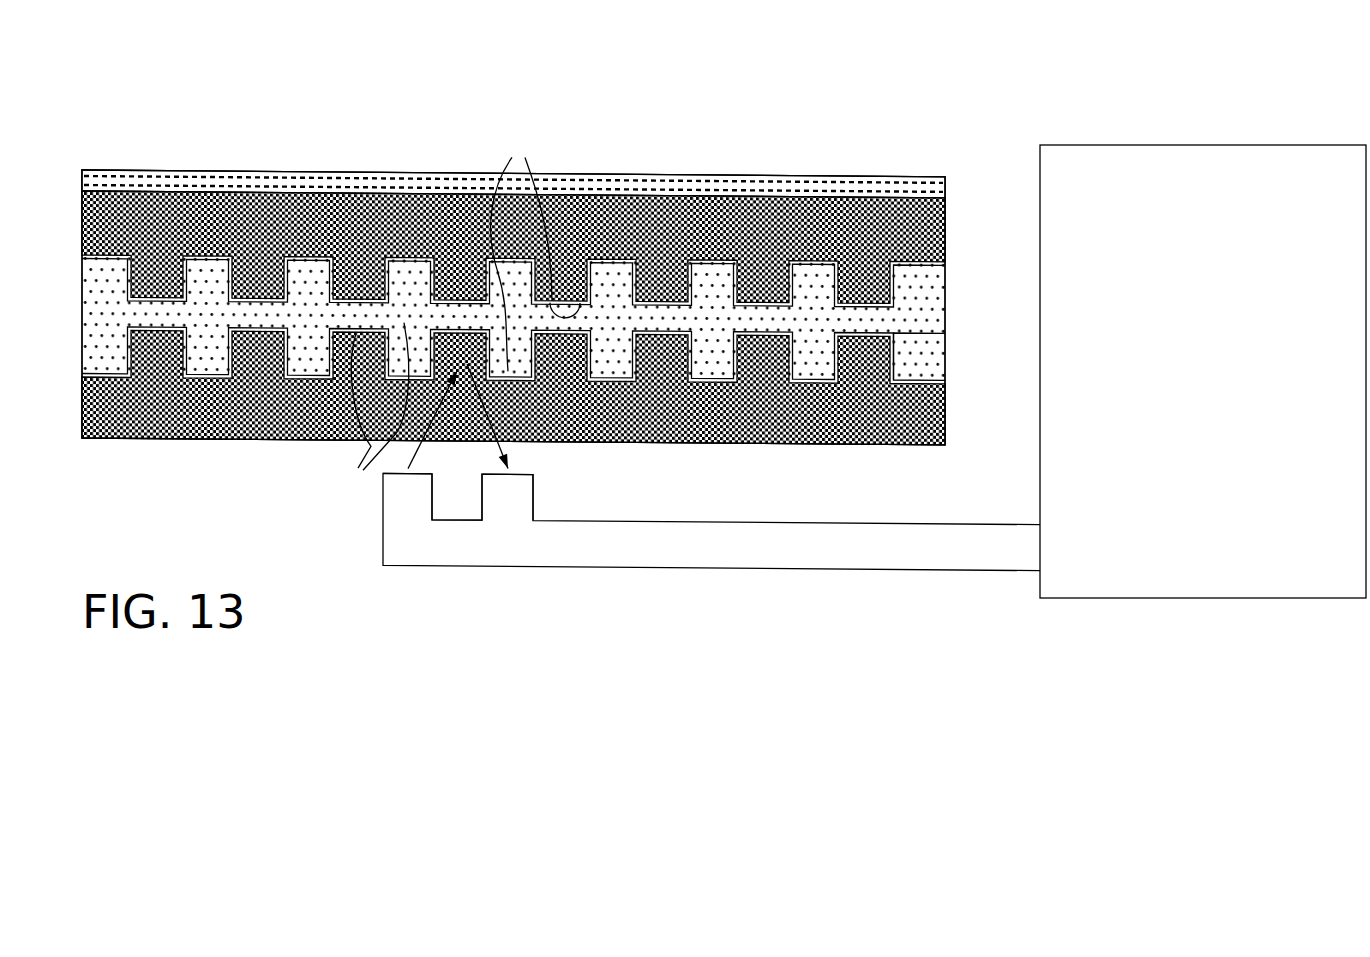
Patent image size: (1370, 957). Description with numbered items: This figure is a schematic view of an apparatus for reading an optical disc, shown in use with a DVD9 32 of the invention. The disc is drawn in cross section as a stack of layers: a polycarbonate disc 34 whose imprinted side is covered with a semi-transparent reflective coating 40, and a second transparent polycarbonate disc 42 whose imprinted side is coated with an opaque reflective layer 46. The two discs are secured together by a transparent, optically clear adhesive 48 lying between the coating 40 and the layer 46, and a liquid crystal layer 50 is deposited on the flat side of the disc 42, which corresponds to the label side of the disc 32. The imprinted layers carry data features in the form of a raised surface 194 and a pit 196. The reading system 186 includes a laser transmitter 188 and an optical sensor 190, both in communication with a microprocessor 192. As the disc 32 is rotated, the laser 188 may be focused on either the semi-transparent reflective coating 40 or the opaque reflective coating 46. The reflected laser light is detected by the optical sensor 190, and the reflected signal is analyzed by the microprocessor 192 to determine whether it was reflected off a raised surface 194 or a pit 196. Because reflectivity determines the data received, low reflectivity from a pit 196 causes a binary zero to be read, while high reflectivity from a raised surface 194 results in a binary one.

The DVD9 32 is at (222, 160).
The liquid crystal layer 50 is at (393, 176).
The second transparent polycarbonate disc 42 is at (682, 236).
The polycarbonate disc 34 is at (682, 416).
The opaque reflective layer 46 is at (913, 262).
The transparent optically clear adhesive 48 is at (229, 329).
The semi-transparent reflective coating 40 is at (917, 374).
The raised surface 194 is at (536, 251).
The pit 196 is at (351, 403).
The system 186 is at (957, 110).
The laser transmitter 188 is at (383, 533).
The optical sensor 190 is at (533, 498).
The microprocessor 192 is at (1236, 380).